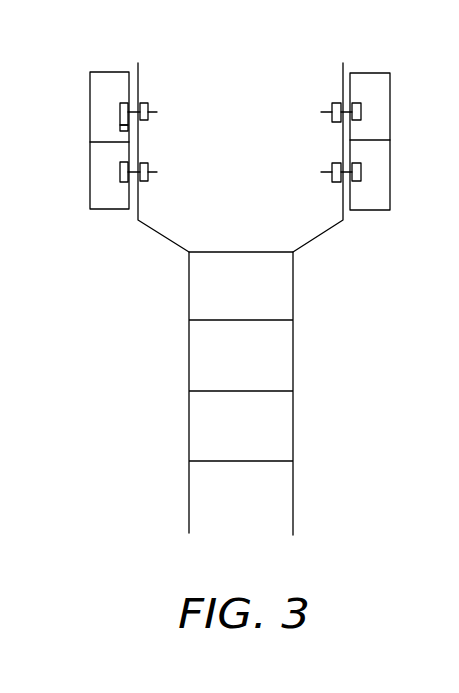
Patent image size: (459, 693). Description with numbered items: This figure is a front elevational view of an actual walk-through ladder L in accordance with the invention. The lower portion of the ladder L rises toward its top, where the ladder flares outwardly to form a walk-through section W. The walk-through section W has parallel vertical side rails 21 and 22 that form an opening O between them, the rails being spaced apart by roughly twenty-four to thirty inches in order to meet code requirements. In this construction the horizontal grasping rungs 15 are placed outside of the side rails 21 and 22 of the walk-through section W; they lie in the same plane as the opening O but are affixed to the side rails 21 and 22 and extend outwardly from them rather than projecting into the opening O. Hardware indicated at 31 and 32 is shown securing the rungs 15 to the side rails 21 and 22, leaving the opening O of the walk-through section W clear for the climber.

The horizontal grasping rungs 15 is at (108, 73).
The side rail 21 is at (139, 208).
The side rail 22 is at (343, 203).
The bolt 31 is at (139, 128).
The nut 32 is at (148, 118).
The walk-through section W is at (142, 71).
The walk-through ladder L is at (186, 502).
The opening O is at (265, 162).